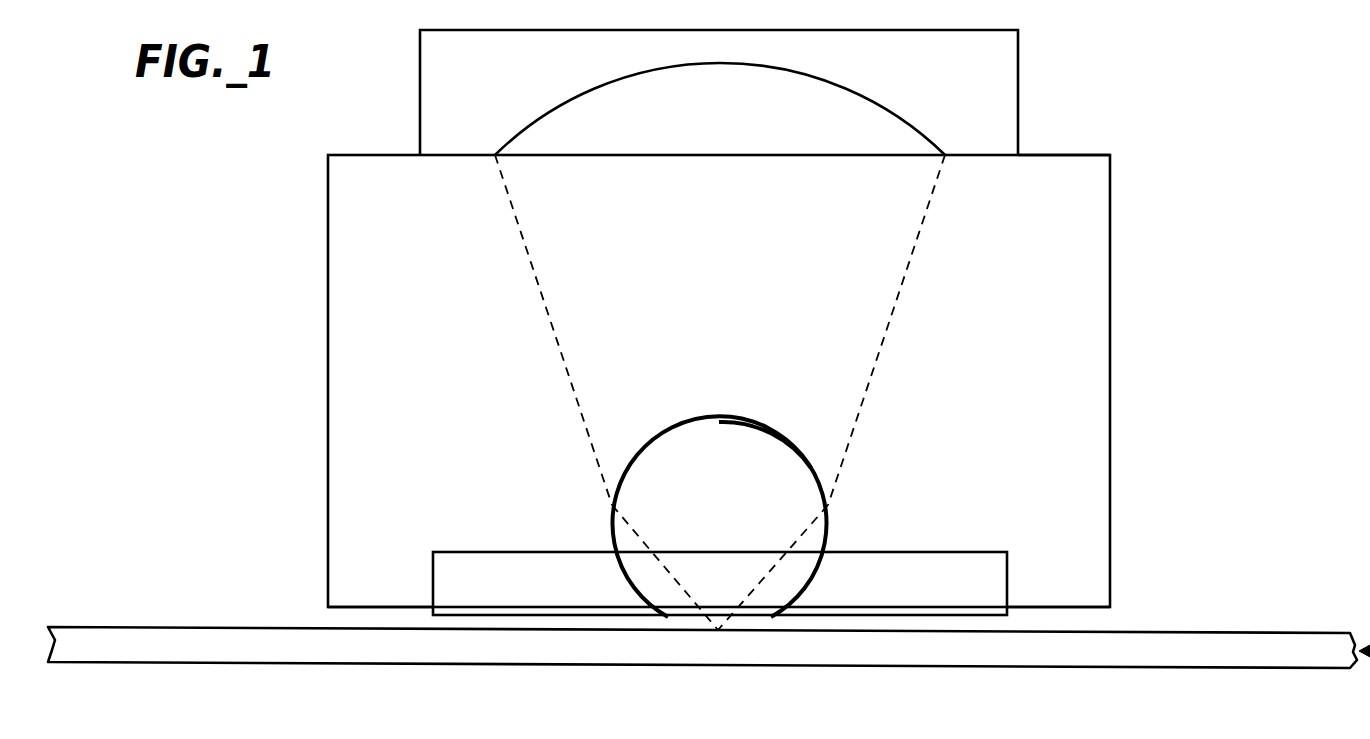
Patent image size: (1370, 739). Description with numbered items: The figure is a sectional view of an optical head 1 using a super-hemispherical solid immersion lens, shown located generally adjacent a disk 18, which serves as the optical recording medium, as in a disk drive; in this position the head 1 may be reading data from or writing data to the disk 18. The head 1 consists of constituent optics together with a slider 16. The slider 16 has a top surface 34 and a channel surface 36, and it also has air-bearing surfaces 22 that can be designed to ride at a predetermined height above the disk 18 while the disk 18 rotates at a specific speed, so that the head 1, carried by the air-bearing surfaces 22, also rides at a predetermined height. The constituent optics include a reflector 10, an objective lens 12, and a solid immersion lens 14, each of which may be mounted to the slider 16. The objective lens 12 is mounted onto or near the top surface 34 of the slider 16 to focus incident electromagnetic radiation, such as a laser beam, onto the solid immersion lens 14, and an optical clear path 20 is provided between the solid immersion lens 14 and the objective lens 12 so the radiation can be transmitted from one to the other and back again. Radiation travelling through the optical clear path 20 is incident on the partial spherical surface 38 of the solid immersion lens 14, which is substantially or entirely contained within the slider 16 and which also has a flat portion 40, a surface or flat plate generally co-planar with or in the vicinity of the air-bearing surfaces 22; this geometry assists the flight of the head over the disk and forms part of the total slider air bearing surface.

The head 1 is at (1160, 277).
The reflector 10 is at (1018, 90).
The objective lens 12 is at (720, 67).
The solid immersion lens (SIL) 14 is at (731, 494).
The slider 16 is at (1004, 365).
The disk 18 is at (709, 637).
The optical clear path 20 is at (764, 259).
The air-bearing surfaces 22 is at (352, 604).
The top surface 34 is at (1043, 158).
The channel surface 36 is at (927, 552).
The spherical surface 38 is at (757, 425).
The flat portion 40 is at (663, 604).